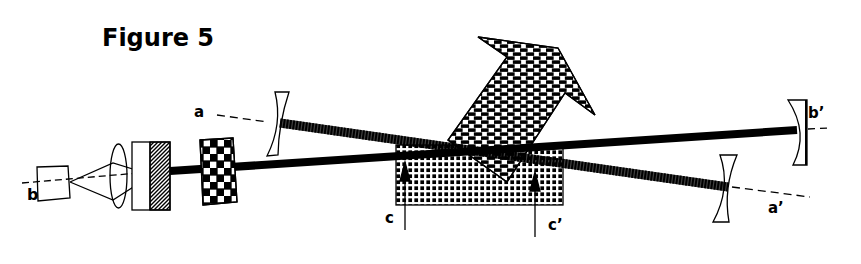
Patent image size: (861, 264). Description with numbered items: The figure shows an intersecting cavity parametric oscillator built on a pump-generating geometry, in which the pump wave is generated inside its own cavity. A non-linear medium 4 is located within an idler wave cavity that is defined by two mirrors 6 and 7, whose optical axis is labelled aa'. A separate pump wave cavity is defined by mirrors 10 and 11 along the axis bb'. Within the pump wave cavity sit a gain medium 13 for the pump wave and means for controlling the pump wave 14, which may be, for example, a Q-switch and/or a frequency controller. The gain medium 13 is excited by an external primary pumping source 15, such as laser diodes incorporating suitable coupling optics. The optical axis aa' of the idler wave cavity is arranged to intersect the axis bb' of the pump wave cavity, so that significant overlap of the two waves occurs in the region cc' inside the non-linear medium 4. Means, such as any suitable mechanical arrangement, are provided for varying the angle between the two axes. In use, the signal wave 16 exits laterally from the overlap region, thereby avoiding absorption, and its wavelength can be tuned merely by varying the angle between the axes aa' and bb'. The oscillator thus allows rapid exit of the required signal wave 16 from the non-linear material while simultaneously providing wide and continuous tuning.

The non-linear medium 4 is at (479, 188).
The mirror 6 is at (283, 111).
The mirror 7 is at (725, 198).
The mirror 10 is at (151, 188).
The mirror 11 is at (795, 116).
The gain medium 13 is at (204, 202).
The means for controlling the pump wave 14 is at (273, 170).
The external primary pumping source 15 is at (94, 174).
The signal wave 16 is at (521, 109).